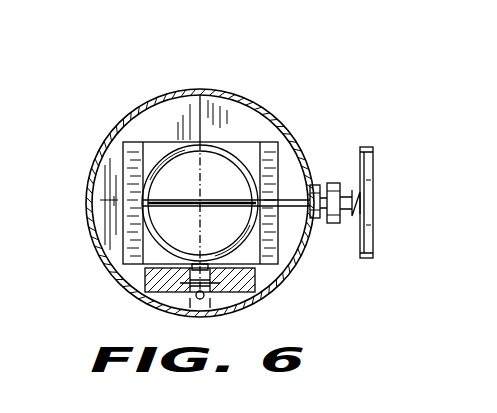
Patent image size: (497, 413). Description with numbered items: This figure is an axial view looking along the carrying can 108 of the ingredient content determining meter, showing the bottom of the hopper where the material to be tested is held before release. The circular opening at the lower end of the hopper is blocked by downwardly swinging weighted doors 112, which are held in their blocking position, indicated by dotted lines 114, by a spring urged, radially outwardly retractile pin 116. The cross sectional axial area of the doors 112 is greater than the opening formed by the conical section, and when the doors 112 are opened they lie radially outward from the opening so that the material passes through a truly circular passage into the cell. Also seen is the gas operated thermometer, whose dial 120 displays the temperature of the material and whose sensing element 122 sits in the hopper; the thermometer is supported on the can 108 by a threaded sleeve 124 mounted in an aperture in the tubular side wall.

The carrying can 108 is at (172, 92).
The weighted doors 112 is at (120, 150).
The dotted lines 114 is at (198, 240).
The retractile pin 116 is at (216, 246).
The dial 120 is at (385, 121).
The sensing element 122 is at (214, 200).
The threaded sleeve 124 is at (337, 224).